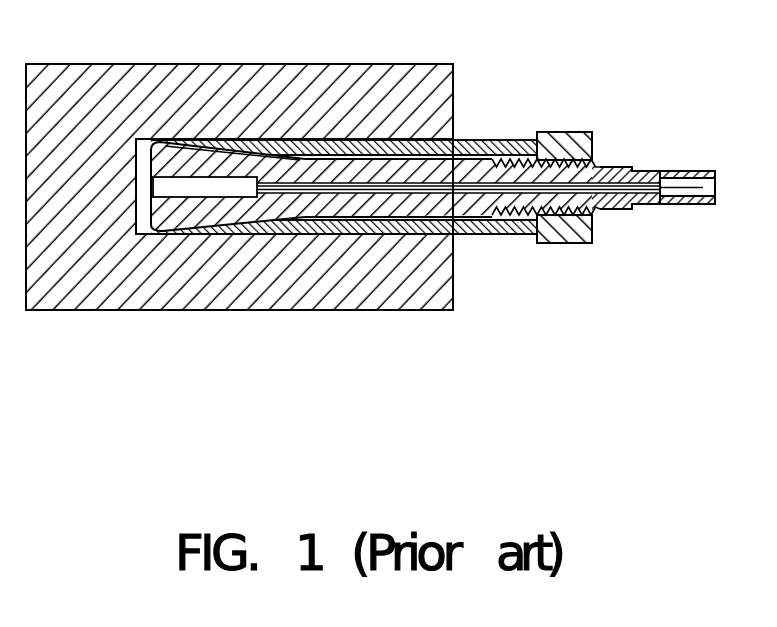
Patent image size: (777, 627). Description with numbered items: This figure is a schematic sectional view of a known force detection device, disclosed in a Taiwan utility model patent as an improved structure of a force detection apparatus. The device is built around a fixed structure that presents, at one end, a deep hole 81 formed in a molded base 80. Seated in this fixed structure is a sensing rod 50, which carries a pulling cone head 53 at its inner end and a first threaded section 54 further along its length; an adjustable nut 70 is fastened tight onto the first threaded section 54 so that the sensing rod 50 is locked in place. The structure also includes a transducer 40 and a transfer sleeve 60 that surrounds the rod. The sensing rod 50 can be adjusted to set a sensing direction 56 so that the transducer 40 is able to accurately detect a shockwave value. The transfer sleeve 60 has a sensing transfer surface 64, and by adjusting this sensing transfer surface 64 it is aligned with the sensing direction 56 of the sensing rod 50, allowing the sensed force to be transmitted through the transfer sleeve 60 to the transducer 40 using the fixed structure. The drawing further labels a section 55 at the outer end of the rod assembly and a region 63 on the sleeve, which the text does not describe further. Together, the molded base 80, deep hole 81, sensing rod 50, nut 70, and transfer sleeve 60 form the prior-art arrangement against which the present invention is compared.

The transducer 40 is at (203, 190).
The sensing rod 50 is at (376, 205).
The pulling cone head 53 is at (165, 223).
The first threaded section 54 is at (513, 160).
The connector tip 55 is at (632, 167).
The sensing direction 56 is at (157, 147).
The transfer sleeve 60 is at (472, 235).
The sleeve 63 is at (474, 152).
The sensing transfer surface 64 is at (183, 148).
The adjustable nut 70 is at (561, 233).
The molded base 80 is at (61, 82).
The deep hole 81 is at (141, 185).